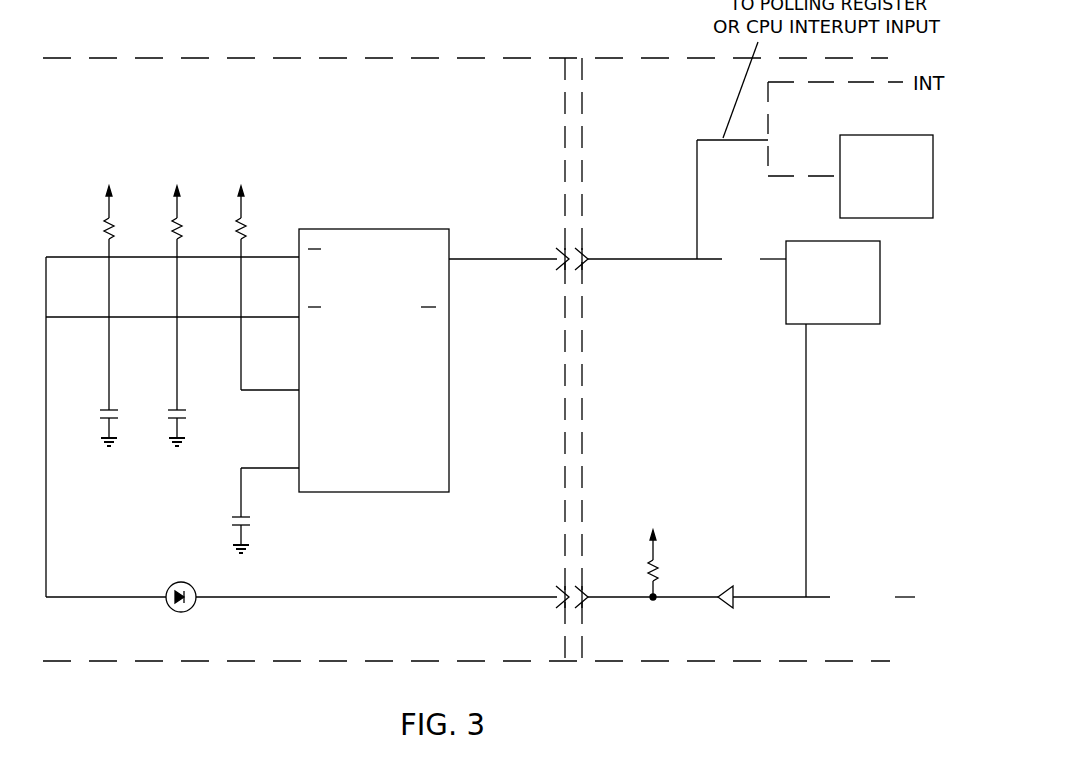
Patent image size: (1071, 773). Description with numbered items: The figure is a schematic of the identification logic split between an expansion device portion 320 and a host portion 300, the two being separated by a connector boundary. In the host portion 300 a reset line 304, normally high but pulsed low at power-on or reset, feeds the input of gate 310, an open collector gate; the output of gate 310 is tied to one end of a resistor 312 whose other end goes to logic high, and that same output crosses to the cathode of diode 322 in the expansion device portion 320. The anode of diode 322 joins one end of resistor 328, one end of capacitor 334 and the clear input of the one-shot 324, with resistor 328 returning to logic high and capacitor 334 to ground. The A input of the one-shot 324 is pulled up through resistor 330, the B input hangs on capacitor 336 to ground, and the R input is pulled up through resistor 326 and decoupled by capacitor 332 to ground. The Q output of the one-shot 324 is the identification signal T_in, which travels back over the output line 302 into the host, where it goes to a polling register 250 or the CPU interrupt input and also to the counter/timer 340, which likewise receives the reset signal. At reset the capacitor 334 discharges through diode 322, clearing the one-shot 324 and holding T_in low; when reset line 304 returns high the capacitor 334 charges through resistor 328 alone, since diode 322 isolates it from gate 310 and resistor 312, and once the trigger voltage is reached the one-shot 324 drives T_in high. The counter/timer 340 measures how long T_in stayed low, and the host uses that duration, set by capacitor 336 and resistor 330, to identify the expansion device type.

The expansion device portion 320 is at (206, 56).
The host portion 300 is at (598, 56).
The resistor 326 is at (121, 232).
The resistor 328 is at (189, 232).
The resistor 330 is at (254, 232).
The capacitor 332 is at (104, 408).
The capacitor 334 is at (171, 408).
The capacitor 336 is at (235, 513).
The diode 322 is at (178, 611).
The one-shot 324 is at (374, 333).
The Q output line to counter/timer 302 is at (618, 259).
The polling register 250 is at (884, 219).
The counter/timer 340 is at (838, 325).
The reset line 304 is at (780, 598).
The gate 310 is at (742, 576).
The resistor 312 is at (650, 565).